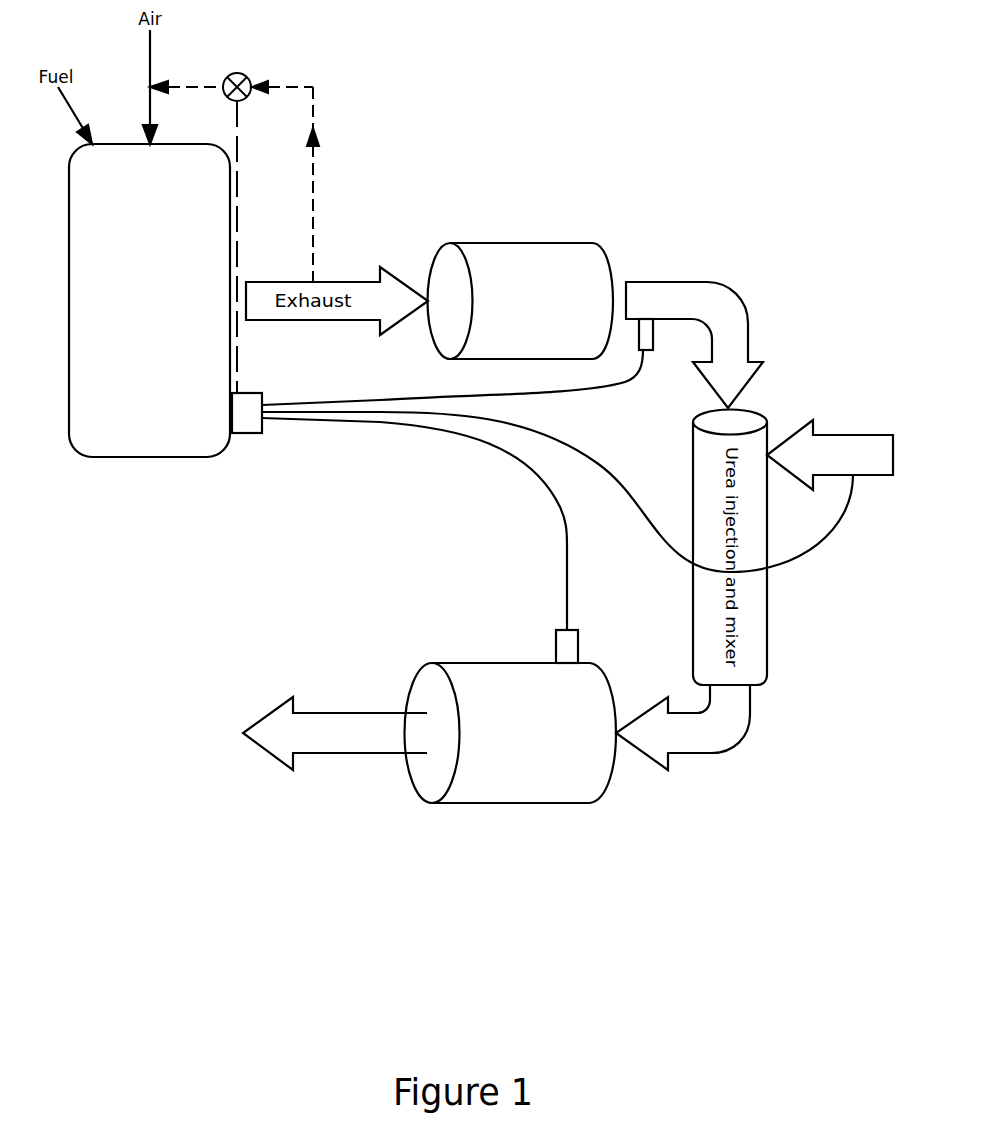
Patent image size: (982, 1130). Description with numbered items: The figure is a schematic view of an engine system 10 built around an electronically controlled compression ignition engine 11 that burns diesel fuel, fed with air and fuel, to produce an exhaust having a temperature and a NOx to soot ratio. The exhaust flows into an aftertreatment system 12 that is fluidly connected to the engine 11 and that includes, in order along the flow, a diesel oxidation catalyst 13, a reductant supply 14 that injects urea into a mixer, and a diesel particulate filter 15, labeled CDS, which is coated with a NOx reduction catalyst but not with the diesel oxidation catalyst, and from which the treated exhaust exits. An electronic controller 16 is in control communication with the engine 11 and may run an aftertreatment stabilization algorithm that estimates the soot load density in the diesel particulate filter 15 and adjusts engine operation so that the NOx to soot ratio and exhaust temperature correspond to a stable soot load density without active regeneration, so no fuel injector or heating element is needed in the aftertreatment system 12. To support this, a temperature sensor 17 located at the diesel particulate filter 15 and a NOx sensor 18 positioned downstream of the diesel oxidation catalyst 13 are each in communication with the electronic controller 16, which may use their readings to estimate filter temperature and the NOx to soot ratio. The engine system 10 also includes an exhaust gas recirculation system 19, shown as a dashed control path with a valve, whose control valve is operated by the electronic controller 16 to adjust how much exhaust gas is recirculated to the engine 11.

The engine system 10 is at (752, 173).
The electronically controlled compression ignition engine 11 is at (152, 458).
The aftertreatment system 12 is at (754, 311).
The diesel oxidation catalyst 13 is at (520, 242).
The reductant supply 14 is at (863, 435).
The diesel particulate filter 15 is at (507, 658).
The electronic controller 16 is at (245, 435).
The temperature sensor 17 is at (575, 630).
The NOx sensor 18 is at (646, 350).
The exhaust gas recirculation system 19 is at (313, 197).